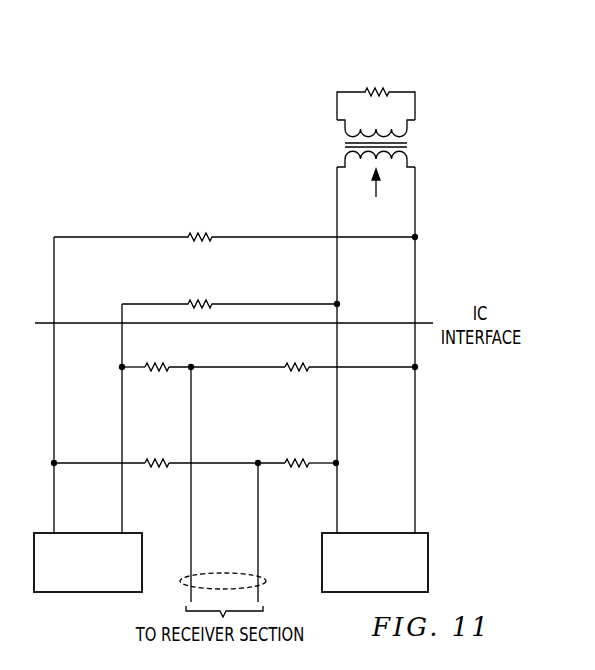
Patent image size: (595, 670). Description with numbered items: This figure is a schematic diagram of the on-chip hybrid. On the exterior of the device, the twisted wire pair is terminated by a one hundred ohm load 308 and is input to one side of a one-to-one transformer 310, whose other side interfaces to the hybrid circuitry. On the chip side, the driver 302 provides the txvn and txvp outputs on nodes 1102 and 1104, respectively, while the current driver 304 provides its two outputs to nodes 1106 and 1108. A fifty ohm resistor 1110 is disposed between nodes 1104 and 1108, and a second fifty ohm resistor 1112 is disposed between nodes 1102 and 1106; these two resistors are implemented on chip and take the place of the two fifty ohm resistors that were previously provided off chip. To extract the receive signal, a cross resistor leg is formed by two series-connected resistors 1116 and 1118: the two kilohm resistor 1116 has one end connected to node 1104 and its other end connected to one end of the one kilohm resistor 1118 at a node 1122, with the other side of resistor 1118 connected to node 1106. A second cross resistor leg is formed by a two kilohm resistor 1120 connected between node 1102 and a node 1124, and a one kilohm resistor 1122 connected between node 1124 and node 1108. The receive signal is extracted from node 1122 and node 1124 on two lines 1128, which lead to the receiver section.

The driver 302 is at (67, 593).
The current driver 304 is at (430, 565).
The 100 ohm load 308 is at (378, 88).
The 1:1 transformer 310 is at (332, 120).
The node 1102 is at (58, 468).
The node 1104 is at (118, 375).
The node 1106 is at (410, 377).
The node 1108 is at (338, 468).
The resistor 1110 is at (202, 300).
The resistor 1112 is at (202, 233).
The resistor 1116 is at (163, 372).
The resistor 1118 is at (295, 372).
The resistor 1120 is at (167, 468).
The resistor / node 1122 is at (193, 368).
The node 1124 is at (253, 468).
The lines 1128 is at (262, 582).